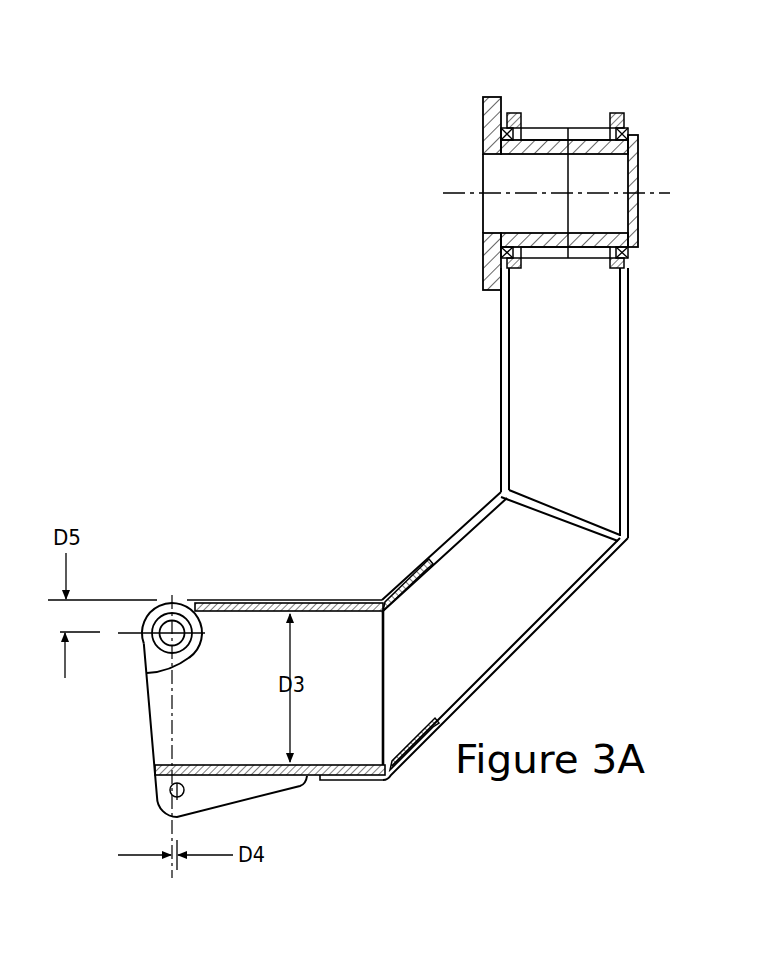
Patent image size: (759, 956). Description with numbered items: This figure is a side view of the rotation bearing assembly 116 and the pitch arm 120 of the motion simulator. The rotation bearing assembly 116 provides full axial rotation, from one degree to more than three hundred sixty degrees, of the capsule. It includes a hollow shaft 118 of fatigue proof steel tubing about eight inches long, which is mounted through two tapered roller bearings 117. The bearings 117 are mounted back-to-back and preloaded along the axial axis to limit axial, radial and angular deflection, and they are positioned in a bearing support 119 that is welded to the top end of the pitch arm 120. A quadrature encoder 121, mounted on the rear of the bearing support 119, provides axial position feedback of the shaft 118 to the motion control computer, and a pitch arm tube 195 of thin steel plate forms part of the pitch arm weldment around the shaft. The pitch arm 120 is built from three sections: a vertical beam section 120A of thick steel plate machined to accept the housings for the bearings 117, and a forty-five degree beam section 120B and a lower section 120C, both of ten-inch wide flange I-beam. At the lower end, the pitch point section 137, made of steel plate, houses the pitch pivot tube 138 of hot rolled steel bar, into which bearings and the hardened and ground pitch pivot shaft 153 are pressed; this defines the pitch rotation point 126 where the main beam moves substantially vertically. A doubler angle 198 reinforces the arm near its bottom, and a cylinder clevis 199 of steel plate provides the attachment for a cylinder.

The rotation bearing assembly 116 is at (695, 118).
The bearings 117 is at (515, 113).
The hollow shaft 118 is at (483, 118).
The bearing support 119 is at (632, 262).
The quadrature encoder 121 is at (638, 145).
The pitch arm tube 195 is at (540, 128).
The pitch arm 120 is at (628, 373).
The vertical beam section 120A is at (601, 386).
The 45 degree beam section 120B is at (506, 602).
The pitch arm section 120C is at (368, 694).
The pitch rotation point 126 is at (168, 604).
The pitch point section 137 is at (130, 600).
The pitch pivot tube 138 is at (175, 612).
The pitch pivot shaft 153 is at (196, 661).
The doubler angle 198 is at (350, 779).
The cylinder clevis 199 is at (163, 812).